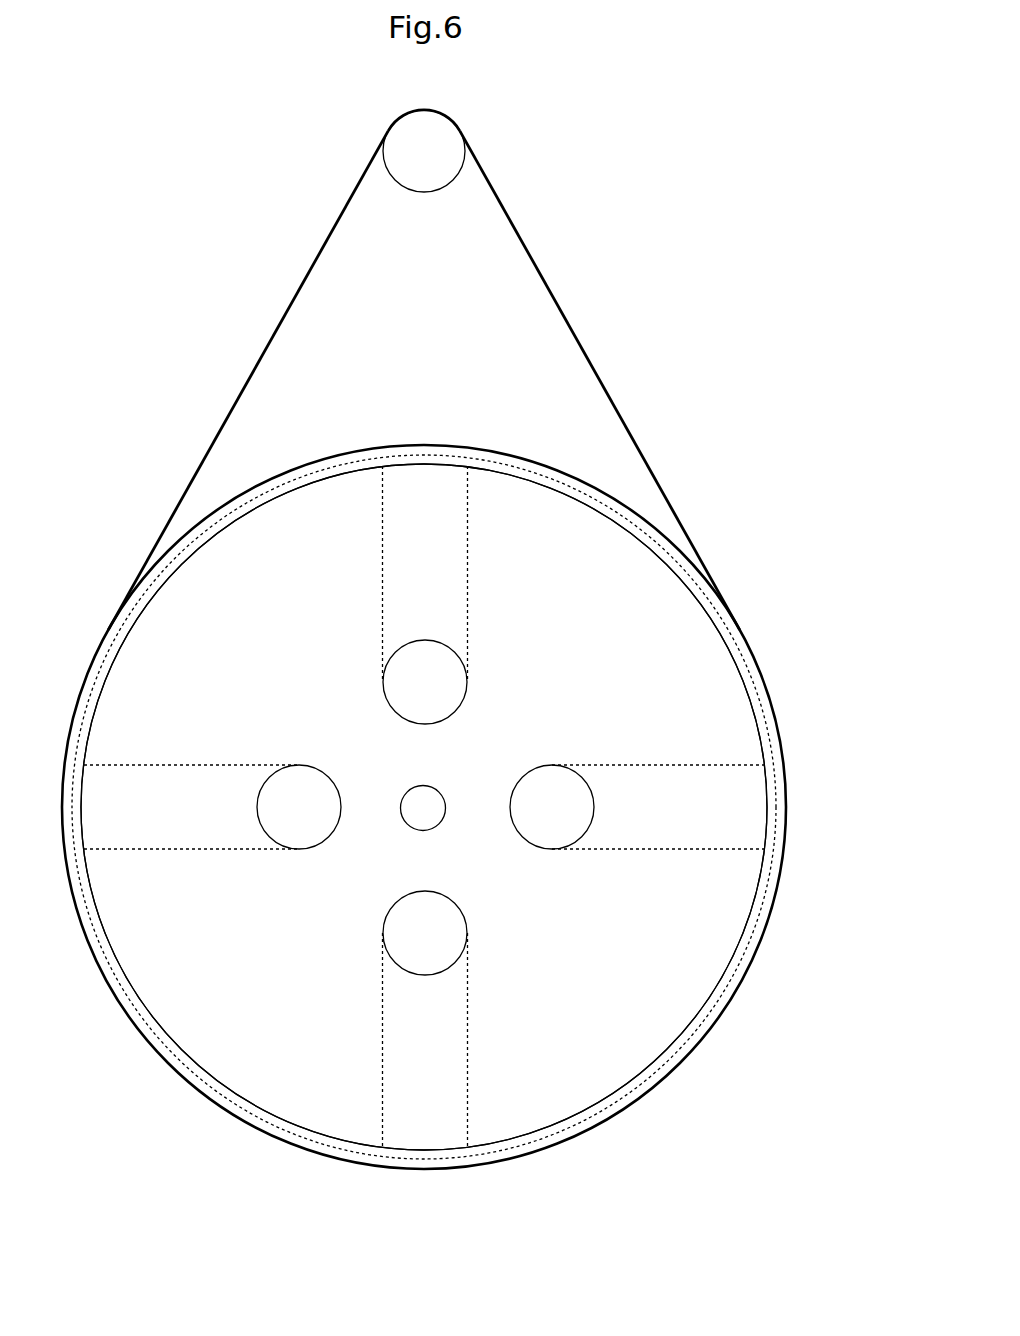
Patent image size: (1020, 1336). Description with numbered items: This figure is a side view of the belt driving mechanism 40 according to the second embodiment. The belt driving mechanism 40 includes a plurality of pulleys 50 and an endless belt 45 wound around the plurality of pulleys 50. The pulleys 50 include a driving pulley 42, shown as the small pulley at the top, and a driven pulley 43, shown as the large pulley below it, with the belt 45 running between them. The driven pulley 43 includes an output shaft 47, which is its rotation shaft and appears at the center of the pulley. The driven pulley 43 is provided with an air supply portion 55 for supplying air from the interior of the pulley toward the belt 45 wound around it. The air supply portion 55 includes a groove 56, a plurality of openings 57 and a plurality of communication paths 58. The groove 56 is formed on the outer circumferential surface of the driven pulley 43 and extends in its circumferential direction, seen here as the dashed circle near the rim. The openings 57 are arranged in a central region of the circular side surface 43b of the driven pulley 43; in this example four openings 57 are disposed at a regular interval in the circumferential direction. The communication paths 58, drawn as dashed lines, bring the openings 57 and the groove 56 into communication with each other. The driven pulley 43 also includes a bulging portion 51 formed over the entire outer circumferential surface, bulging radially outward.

The belt driving mechanism 40 is at (442, 90).
The driving pulley 42 is at (443, 137).
The driven pulley 43 is at (427, 766).
The side surface 43b is at (682, 995).
The endless belt 45 is at (572, 330).
The output shaft 47 is at (435, 820).
The pulleys 50 is at (427, 630).
The bulging portion 51 is at (645, 1088).
The air supply portion 55 is at (424, 765).
The groove 56 is at (296, 478).
The openings 57 is at (388, 698).
The communication paths 58 is at (457, 587).